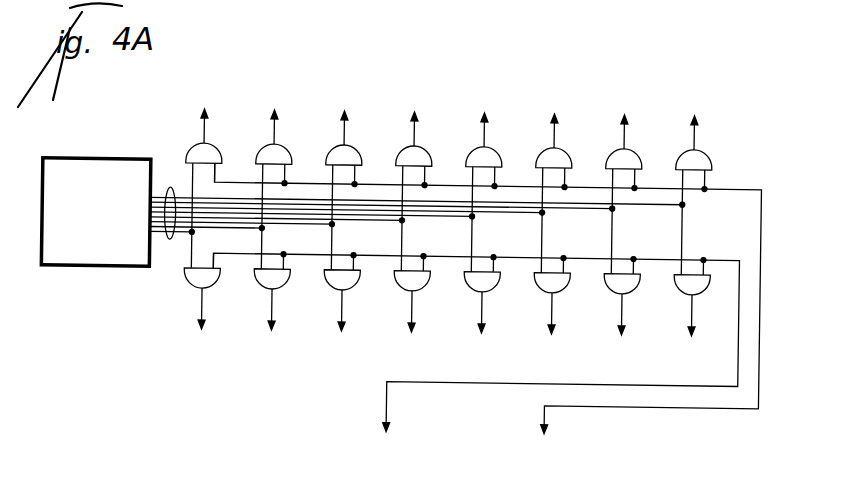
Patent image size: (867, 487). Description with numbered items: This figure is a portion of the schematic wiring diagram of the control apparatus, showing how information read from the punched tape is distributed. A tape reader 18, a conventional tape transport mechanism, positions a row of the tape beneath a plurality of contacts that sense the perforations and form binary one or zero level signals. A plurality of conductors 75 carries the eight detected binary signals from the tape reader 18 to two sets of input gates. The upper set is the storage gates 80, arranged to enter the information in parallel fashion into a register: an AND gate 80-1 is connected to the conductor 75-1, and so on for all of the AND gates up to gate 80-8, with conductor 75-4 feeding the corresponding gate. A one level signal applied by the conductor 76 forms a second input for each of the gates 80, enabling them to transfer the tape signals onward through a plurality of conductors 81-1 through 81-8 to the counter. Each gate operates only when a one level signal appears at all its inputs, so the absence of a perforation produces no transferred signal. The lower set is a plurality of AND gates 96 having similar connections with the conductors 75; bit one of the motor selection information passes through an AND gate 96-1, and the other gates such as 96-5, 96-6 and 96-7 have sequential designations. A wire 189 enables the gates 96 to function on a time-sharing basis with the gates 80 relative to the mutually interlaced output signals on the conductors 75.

The tape reader 18 is at (63, 269).
The conductors 75 is at (407, 255).
The conductor 75-1 is at (630, 202).
The conductor 75-4 is at (418, 220).
The conductor 76 is at (690, 402).
The storage gates 80 is at (457, 70).
The AND gate 80-1 is at (727, 185).
The AND gate 80-8 is at (169, 176).
The conductor 81-1 is at (694, 128).
The conductor 81-8 is at (203, 124).
The AND gates 96 is at (188, 329).
The AND gate 96-1 is at (684, 286).
The AND gate 96-5 is at (407, 288).
The AND gate 96-6 is at (337, 289).
The AND gate 96-7 is at (266, 289).
The wire 189 is at (389, 397).